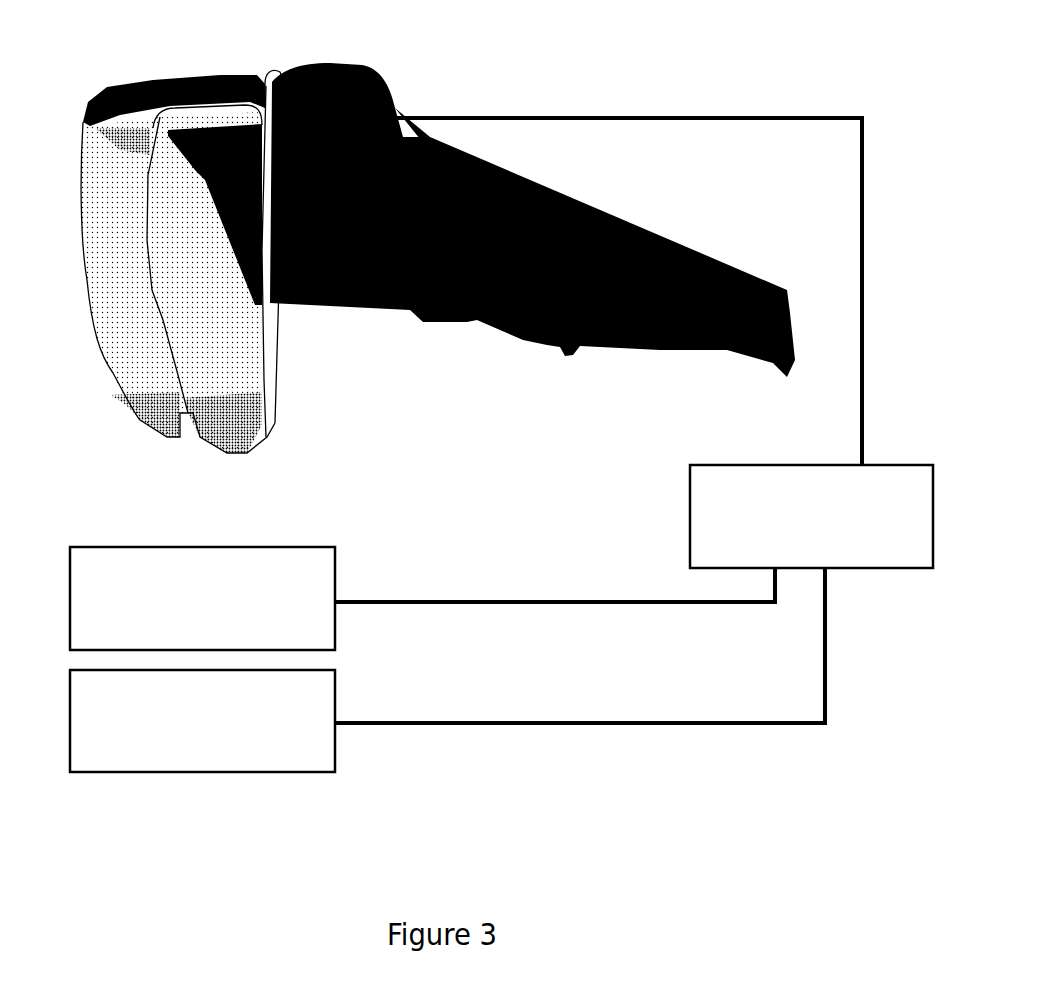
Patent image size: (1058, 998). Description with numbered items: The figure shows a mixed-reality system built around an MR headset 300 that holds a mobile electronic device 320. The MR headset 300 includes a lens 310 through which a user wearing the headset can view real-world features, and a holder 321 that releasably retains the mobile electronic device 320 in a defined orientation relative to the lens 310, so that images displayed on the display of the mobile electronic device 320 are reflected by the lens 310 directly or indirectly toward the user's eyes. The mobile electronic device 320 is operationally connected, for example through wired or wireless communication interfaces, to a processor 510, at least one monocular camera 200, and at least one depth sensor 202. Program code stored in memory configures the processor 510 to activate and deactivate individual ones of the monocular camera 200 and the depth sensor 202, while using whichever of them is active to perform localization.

The MR headset 300 is at (556, 90).
The lens 310 is at (180, 250).
The mobile electronic device 320 is at (327, 283).
The holder 321 is at (442, 323).
The processor 510 is at (831, 542).
The monocular camera 200 is at (323, 611).
The depth sensor 202 is at (222, 747).